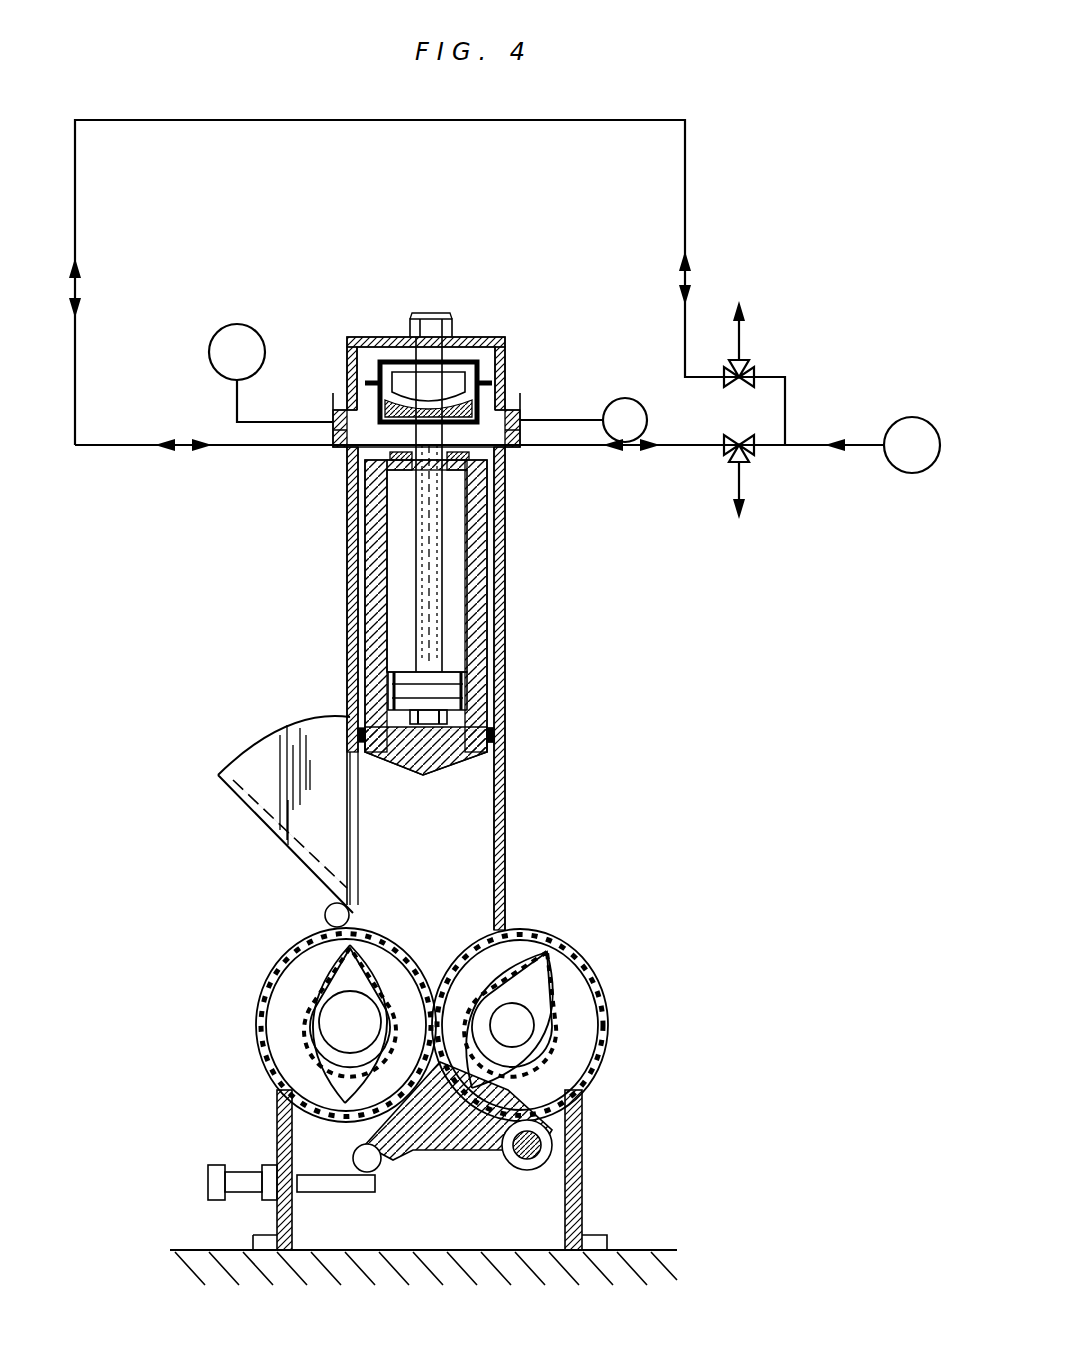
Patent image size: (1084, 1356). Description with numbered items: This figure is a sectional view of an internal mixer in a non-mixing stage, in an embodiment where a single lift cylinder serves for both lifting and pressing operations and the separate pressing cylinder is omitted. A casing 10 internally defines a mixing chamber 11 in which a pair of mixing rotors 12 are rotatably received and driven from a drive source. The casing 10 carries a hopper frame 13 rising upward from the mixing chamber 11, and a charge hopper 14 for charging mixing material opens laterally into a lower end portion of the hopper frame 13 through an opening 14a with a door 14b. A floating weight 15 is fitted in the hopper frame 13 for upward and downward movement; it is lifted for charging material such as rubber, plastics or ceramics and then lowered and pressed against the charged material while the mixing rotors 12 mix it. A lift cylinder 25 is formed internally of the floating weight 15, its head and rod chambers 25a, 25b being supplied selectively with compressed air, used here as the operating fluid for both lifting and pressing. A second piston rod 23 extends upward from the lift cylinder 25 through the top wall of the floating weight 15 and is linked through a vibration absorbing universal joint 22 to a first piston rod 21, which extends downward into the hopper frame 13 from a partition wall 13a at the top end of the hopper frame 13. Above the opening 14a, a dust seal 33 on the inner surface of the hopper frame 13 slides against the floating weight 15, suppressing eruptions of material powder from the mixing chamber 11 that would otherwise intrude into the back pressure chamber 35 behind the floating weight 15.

The casing 10 is at (421, 1001).
The mixing chamber 11 is at (568, 1035).
The mixing rotors 12 is at (313, 1015).
The hopper frame 13 is at (505, 766).
The partition wall 13a is at (482, 337).
The charge hopper 14 is at (262, 760).
The opening 14a is at (350, 757).
The door 14b is at (270, 830).
The floating weight 15 is at (483, 567).
The first piston rod 21 is at (428, 316).
The vibration absorbing universal joint 22 is at (478, 378).
The second piston rod 23 is at (443, 605).
The lift cylinder 25 is at (419, 613).
The head chamber 25a is at (497, 725).
The rod chamber 25b is at (455, 515).
The dust seal 33 is at (496, 736).
The back pressure chamber 35 is at (348, 463).